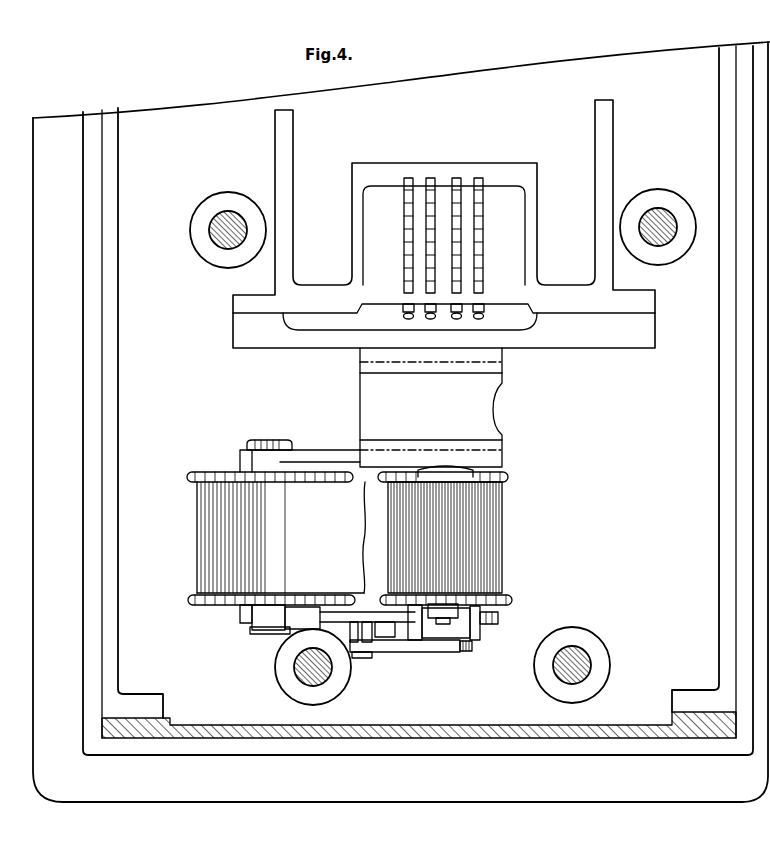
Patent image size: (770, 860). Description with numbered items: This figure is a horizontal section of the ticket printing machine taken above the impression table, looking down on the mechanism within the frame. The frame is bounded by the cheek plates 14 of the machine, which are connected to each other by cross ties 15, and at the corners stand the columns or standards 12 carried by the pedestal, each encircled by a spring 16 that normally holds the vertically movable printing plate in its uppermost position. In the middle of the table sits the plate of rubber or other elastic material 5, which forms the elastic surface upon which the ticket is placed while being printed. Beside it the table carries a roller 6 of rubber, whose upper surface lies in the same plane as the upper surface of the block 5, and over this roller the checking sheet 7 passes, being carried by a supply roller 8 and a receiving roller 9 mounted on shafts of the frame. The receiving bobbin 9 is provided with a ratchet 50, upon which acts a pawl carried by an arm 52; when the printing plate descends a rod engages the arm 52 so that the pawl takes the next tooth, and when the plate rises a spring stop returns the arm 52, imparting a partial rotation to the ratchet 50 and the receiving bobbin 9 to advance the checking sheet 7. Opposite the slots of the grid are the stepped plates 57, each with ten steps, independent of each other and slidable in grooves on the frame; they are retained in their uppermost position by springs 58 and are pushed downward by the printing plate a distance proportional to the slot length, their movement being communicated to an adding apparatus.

The plate of rubber or other elastic material 5 is at (431, 407).
The roller 6 is at (447, 552).
The checking sheet 7 is at (276, 538).
The supply roller 8 is at (216, 478).
The receiving roller 9 is at (492, 573).
The columns or standards 12 is at (210, 221).
The cheek plates 14 is at (424, 730).
The cross ties 15 is at (118, 424).
The springs 16 is at (237, 212).
The ratchet 50 is at (498, 618).
The arm 52 is at (386, 648).
The stepped plates 57 is at (457, 256).
The springs 58 is at (430, 320).